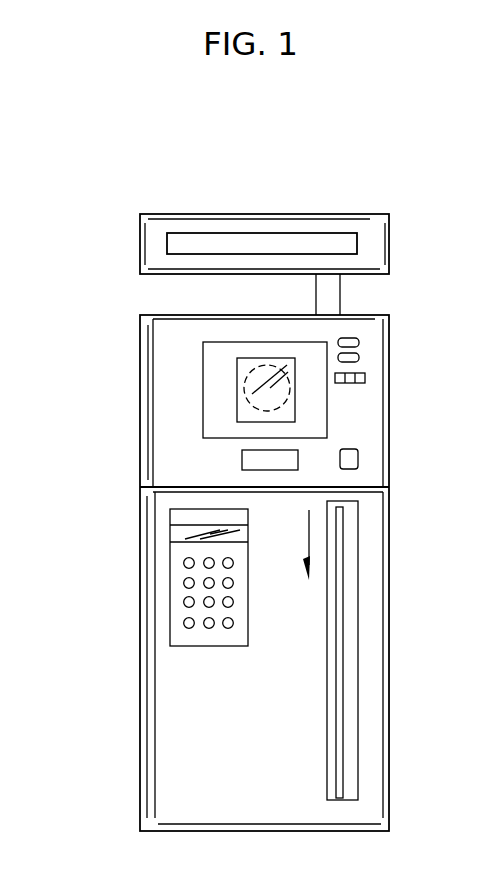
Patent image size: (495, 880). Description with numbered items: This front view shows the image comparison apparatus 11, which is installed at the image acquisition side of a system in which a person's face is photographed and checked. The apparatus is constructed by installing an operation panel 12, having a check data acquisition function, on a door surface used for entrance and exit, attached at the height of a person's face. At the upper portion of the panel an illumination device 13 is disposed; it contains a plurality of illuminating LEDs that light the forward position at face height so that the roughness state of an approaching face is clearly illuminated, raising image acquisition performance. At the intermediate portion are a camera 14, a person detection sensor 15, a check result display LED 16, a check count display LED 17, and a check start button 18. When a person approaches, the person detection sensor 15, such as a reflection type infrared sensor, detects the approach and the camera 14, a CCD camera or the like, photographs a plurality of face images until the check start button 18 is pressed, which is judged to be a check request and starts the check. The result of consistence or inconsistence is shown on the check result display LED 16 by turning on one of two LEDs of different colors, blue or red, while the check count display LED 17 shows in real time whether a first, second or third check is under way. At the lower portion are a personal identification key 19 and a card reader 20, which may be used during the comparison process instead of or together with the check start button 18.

The image comparison apparatus 11 is at (387, 150).
The operation panel 12 is at (136, 355).
The illumination device 13 is at (357, 242).
The camera 14 is at (247, 406).
The person detection sensor 15 is at (250, 460).
The check result display LED 16 is at (348, 338).
The check count display LED 17 is at (365, 378).
The check start button 18 is at (355, 457).
The personal identification key 19 is at (184, 563).
The card reader 20 is at (338, 630).